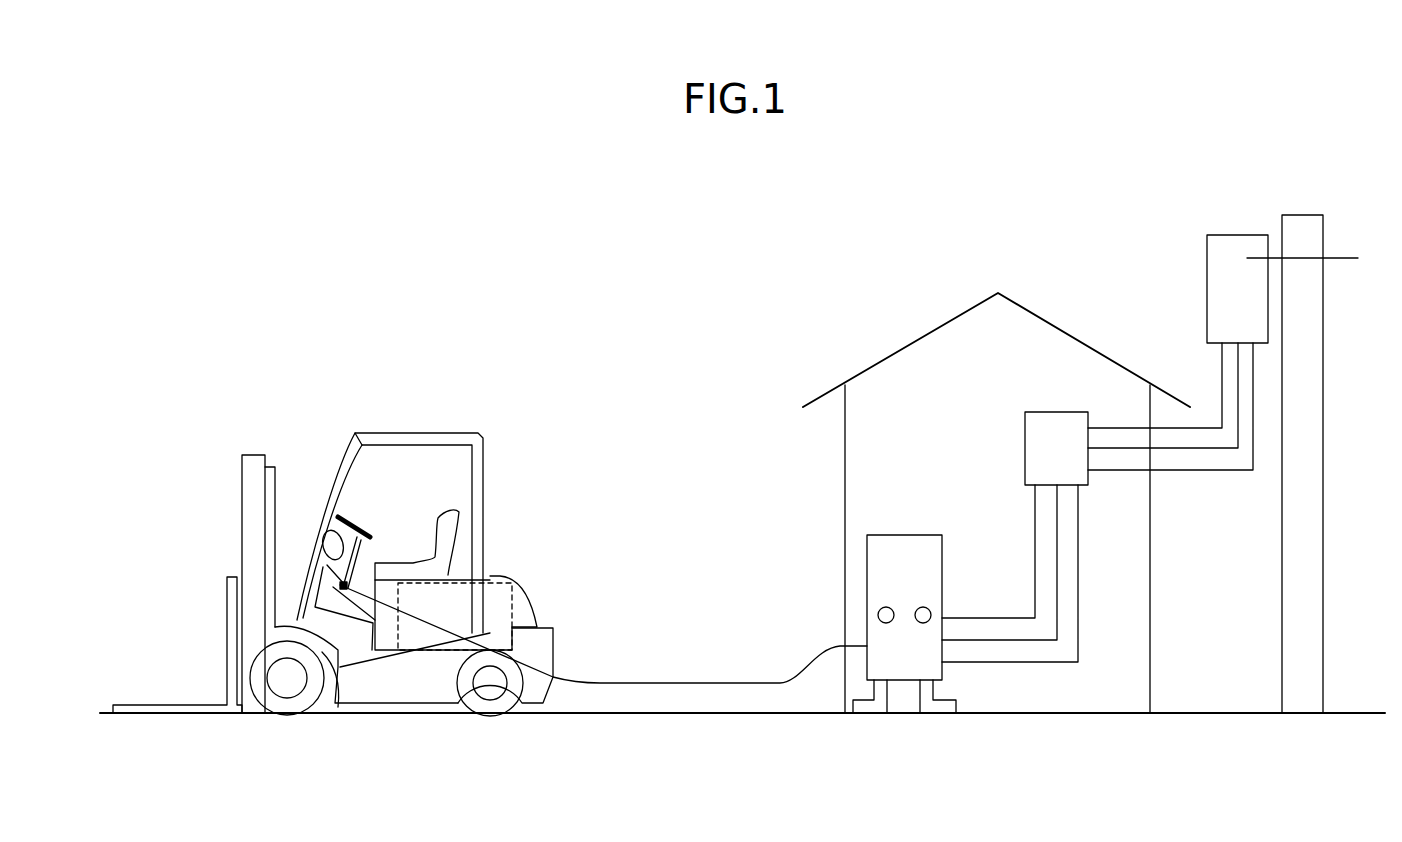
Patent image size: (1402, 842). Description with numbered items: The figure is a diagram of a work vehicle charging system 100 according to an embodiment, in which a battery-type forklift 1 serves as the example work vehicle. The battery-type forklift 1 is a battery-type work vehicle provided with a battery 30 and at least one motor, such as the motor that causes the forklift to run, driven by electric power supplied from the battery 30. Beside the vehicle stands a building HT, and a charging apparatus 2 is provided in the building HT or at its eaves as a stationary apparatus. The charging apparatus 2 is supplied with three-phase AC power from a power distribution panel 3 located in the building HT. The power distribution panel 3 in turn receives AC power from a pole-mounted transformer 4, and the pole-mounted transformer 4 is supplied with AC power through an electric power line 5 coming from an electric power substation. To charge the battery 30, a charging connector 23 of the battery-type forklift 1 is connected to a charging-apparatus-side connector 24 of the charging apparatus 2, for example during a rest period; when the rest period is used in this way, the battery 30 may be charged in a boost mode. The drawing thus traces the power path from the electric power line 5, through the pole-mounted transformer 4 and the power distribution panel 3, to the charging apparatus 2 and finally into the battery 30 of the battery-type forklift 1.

The work vehicle charging system 100 is at (235, 252).
The battery-type forklift 1 is at (197, 423).
The charging connector 23 is at (345, 583).
The charging-apparatus-side connector 24 is at (352, 595).
The battery 30 is at (500, 578).
The building HT is at (913, 353).
The charging apparatus 2 is at (880, 563).
The power distribution panel 3 is at (1046, 425).
The pole-mounted transformer 4 is at (1213, 278).
The electric power line 5 is at (1350, 256).